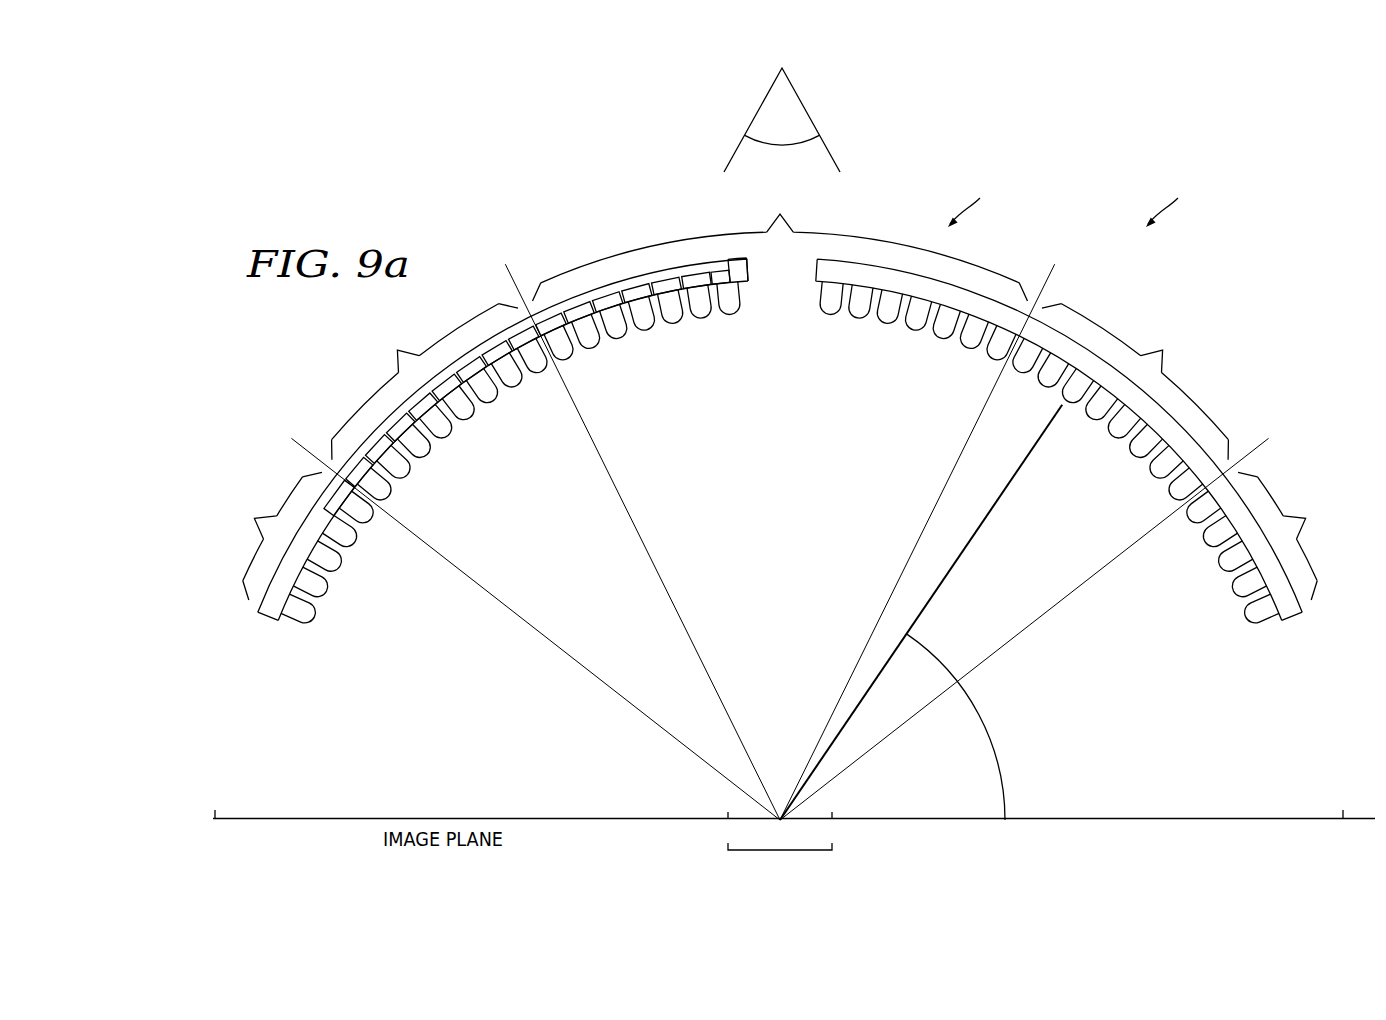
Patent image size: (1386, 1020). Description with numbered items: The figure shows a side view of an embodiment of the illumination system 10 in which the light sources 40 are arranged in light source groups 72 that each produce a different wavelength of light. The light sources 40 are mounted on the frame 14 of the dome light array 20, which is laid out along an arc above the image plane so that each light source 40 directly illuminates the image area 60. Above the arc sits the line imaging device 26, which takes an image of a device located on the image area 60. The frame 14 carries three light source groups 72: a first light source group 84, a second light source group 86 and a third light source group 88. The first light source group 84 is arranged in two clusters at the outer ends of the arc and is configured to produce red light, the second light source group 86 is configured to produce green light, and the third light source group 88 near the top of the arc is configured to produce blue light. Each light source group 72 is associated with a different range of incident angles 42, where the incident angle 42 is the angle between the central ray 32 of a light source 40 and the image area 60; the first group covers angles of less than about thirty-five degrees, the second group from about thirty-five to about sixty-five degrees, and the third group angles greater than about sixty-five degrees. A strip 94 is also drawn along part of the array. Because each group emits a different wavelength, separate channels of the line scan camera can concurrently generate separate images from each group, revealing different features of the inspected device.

The imaging device 26 is at (805, 108).
The frame 14 is at (969, 200).
The illumination system 10 is at (1167, 200).
The light source groups 72 is at (783, 402).
The third light source group 88 is at (780, 242).
The second light source group 86 is at (780, 382).
The first light source group 84 is at (783, 536).
The dome light array 20 is at (749, 266).
The light sources 40 is at (620, 327).
The diffuser strip 94 is at (385, 420).
The central ray 32 is at (996, 506).
The incident angle 42 is at (990, 734).
The image area 60 is at (806, 852).